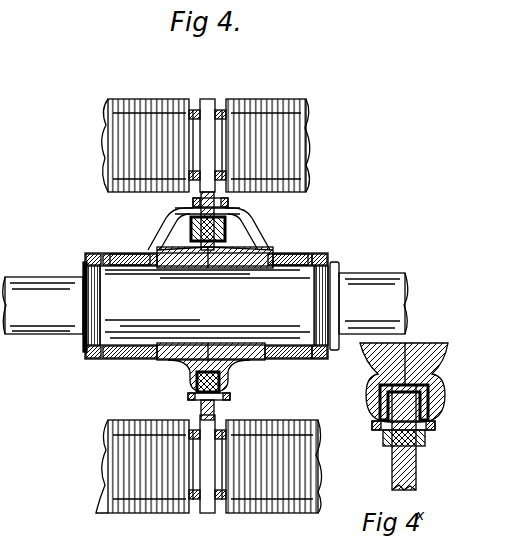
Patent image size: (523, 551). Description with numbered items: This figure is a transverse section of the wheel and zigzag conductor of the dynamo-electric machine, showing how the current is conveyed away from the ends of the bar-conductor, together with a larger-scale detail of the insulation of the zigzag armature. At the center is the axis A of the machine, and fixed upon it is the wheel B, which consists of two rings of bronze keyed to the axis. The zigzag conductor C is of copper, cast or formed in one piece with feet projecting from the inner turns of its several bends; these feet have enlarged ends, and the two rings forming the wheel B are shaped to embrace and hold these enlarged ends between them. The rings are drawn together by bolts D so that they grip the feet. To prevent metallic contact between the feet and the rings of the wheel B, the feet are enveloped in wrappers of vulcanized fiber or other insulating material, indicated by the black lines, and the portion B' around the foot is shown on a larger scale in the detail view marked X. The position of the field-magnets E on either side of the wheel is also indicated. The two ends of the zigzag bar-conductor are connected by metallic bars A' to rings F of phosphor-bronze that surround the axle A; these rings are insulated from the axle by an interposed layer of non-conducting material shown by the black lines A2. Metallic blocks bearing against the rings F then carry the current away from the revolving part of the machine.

In FIG. 4, the axis of the machine A is at (218, 304).
In FIG. 4, the metallic bars A' is at (211, 227).
In FIG. 4, the layer of non-conducting material A2 is at (112, 255).
In FIG. 4, the wheel B is at (219, 376).
In FIG. 4X, the wheel B is at (404, 382).
In FIG. 4, the boss inner portion B' is at (179, 377).
In FIG. 4, the zigzag conductor C is at (208, 99).
In FIG. 4X, the zigzag conductor C is at (416, 472).
In FIG. 4, the bolts D is at (222, 397).
In FIG. 4, the grid blocks E is at (209, 306).
In FIG. 4, the rings F is at (140, 254).
In FIG. 4, the section marker X is at (225, 228).